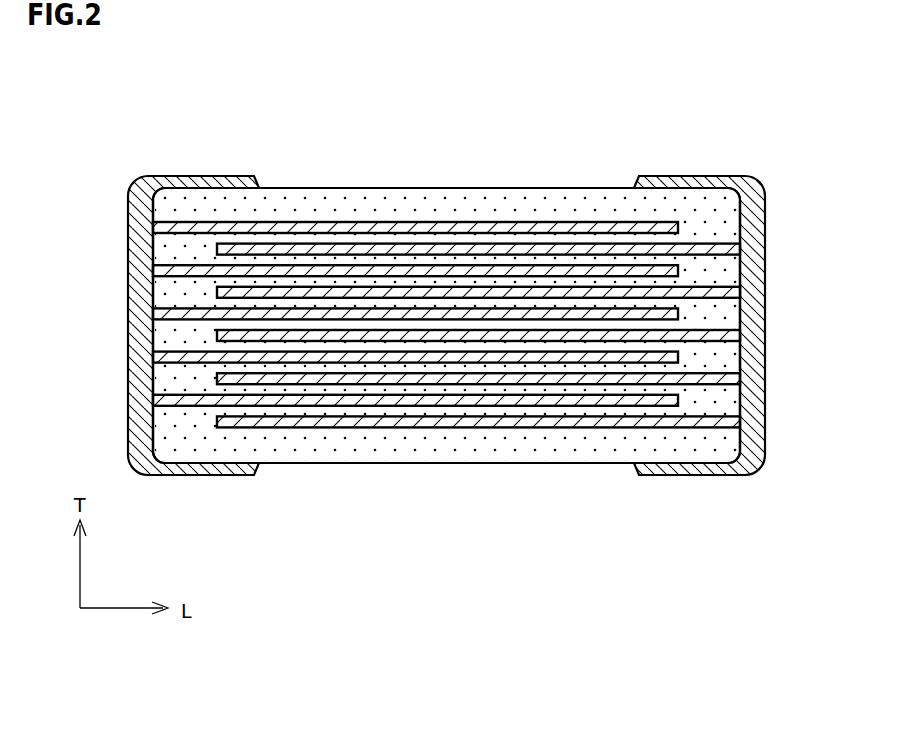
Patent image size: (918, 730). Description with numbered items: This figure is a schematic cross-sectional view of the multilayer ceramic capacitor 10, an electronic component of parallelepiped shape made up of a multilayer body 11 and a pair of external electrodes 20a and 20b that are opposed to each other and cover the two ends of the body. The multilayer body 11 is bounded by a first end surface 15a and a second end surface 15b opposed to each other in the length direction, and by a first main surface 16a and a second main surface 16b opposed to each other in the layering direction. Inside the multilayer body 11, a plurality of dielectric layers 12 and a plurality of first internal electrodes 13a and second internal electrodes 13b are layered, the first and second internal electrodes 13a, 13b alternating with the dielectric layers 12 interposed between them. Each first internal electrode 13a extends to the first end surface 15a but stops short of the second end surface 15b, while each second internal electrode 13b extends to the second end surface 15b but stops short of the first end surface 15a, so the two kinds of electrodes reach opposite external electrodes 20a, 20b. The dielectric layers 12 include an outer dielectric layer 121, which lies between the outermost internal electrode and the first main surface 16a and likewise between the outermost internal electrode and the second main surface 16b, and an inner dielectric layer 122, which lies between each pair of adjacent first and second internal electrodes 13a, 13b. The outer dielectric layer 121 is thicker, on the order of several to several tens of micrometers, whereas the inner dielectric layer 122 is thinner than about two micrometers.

The multilayer ceramic capacitor 10 is at (662, 138).
The multilayer body 11 is at (603, 186).
The dielectric layers 12 is at (446, 312).
The outer dielectric layer 121 is at (360, 200).
The inner dielectric layer 122 is at (492, 265).
The first internal electrode 13a is at (558, 270).
The second internal electrode 13b is at (523, 384).
The first end surface 15a is at (152, 244).
The second end surface 15b is at (742, 230).
The first main surface 16a is at (298, 188).
The second main surface 16b is at (317, 463).
The first external electrode 20a is at (128, 305).
The second external electrode 20b is at (765, 270).